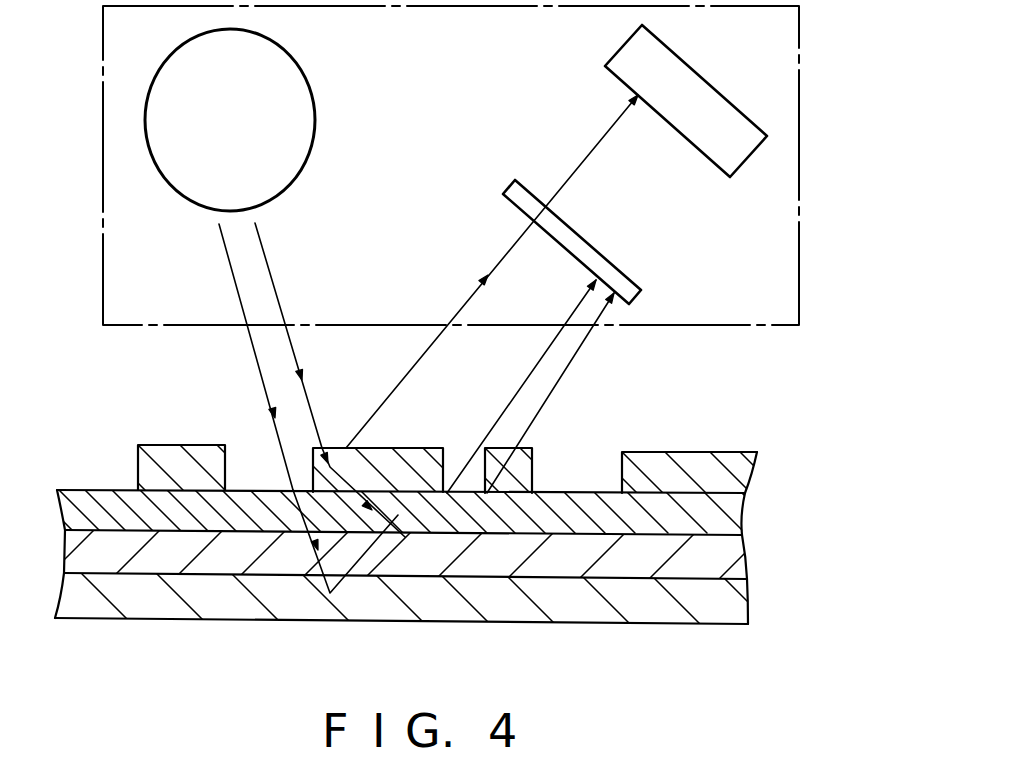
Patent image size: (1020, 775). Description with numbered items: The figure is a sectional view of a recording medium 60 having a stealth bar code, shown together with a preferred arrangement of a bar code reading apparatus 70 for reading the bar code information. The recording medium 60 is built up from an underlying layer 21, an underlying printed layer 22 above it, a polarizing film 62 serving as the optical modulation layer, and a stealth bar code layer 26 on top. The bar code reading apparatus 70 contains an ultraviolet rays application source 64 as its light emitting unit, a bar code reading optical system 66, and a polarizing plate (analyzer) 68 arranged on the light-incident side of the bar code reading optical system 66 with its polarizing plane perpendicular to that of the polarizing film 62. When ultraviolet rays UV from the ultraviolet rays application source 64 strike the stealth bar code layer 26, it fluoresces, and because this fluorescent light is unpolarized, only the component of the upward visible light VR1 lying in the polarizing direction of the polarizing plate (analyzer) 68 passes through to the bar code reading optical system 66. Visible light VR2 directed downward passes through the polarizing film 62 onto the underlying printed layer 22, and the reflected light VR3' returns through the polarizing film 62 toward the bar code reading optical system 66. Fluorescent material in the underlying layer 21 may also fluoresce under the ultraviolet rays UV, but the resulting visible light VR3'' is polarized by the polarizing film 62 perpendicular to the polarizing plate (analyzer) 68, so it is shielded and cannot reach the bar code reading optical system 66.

The underlying layer 21 is at (740, 606).
The underlying printed layer 22 is at (735, 560).
The stealth bar code layer 26 is at (697, 462).
The recording medium 60 is at (677, 634).
The polarizing film 62 is at (735, 517).
The ultraviolet rays application source 64 is at (313, 133).
The bar code reading optical system 66 is at (616, 57).
The polarizing plate (analyzer) 68 is at (505, 194).
The bar code reading apparatus 70 is at (800, 288).
The ultraviolet rays UV is at (243, 293).
The visible light directed to the bar code reading optical system VR1 is at (458, 311).
The visible light directed downward VR2 is at (282, 488).
The light reflected by the underlying printed layer VR3' is at (559, 386).
The visible light caused by fluorescence of the underlying layer VR3'' is at (553, 393).